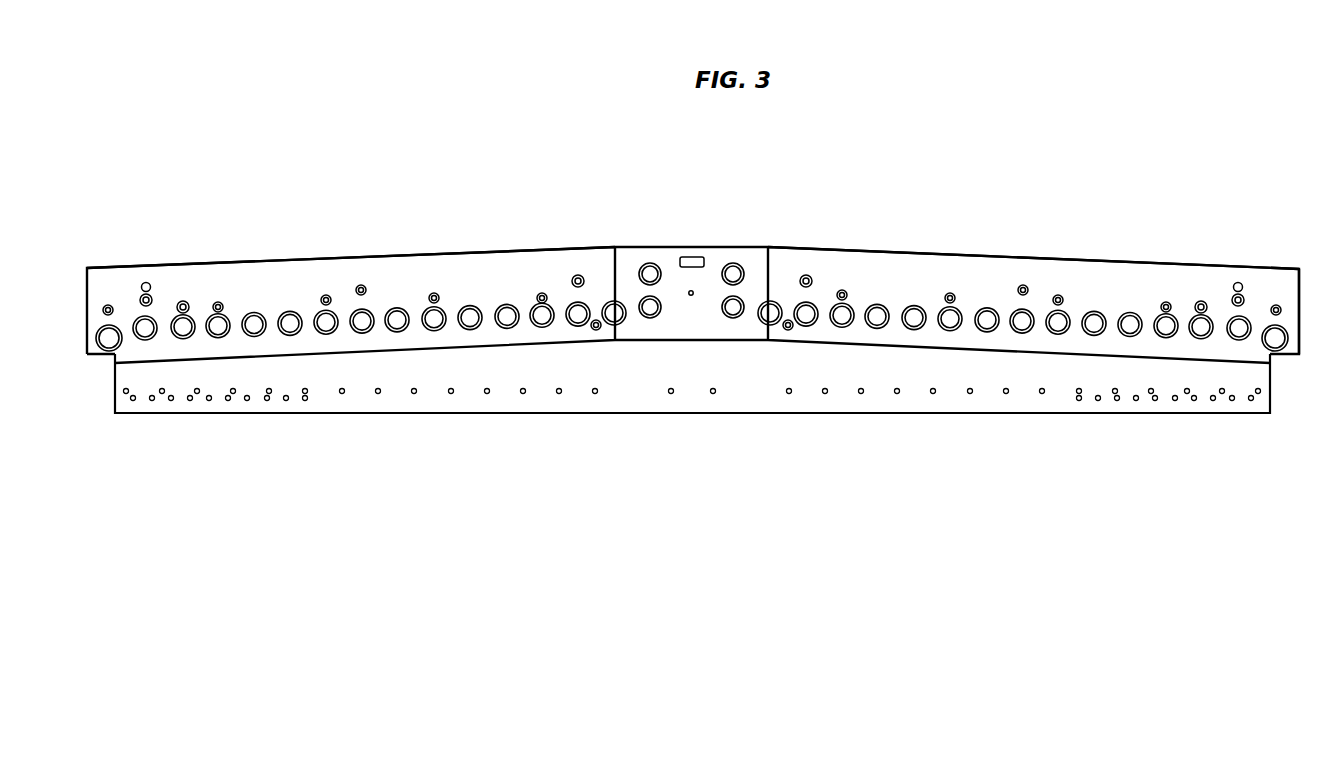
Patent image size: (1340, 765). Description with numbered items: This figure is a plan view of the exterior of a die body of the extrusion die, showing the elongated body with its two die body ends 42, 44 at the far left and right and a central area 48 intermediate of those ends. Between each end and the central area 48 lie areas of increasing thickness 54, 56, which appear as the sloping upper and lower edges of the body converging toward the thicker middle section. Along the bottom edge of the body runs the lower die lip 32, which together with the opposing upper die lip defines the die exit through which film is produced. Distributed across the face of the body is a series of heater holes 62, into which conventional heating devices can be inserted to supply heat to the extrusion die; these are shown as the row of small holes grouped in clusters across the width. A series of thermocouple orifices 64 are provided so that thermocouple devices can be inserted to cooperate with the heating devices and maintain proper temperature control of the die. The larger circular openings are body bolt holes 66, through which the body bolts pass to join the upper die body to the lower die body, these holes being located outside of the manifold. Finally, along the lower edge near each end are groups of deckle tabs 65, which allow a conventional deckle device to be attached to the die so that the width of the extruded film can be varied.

The lower die lip 32 is at (712, 413).
The lower die body end 42 is at (87, 303).
The lower die body end 44 is at (1300, 278).
The central area 48 is at (692, 256).
The area of increasing thickness 54 is at (1245, 273).
The area of increasing thickness 56 is at (484, 253).
The heater holes 62 is at (247, 377).
The thermocouple orifices 64 is at (108, 304).
The deckle tabs 65 is at (209, 401).
The body bolt holes 66 is at (607, 300).